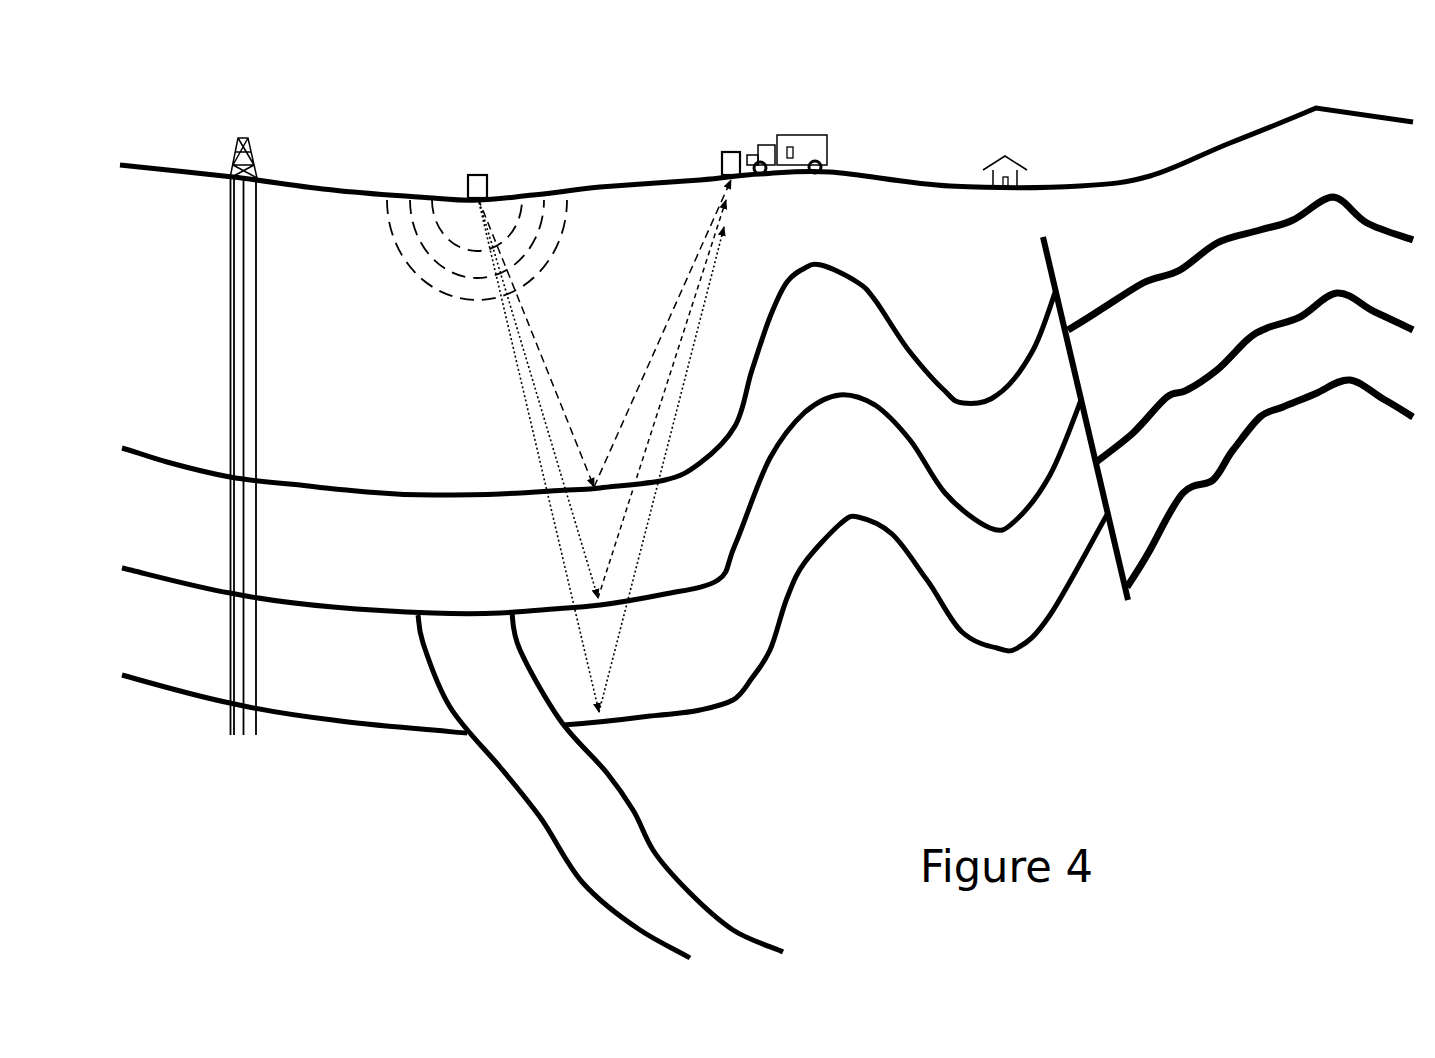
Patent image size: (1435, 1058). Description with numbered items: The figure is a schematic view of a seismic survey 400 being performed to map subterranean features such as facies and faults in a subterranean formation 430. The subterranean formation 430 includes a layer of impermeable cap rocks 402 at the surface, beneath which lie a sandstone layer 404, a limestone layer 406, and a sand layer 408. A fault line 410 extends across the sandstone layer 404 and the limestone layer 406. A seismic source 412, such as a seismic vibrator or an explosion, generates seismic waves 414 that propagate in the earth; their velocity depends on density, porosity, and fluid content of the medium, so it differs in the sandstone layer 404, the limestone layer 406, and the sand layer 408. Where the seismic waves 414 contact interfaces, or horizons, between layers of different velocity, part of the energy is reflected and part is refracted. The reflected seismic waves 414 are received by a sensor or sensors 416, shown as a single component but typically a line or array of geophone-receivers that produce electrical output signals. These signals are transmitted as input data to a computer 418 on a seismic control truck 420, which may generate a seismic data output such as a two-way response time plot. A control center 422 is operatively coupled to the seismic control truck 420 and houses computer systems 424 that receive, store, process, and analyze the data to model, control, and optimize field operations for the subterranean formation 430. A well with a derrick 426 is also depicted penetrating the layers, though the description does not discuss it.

The seismic survey 400 is at (1055, 81).
The impermeable cap rocks 402 is at (175, 337).
The sandstone layer 404 is at (357, 560).
The limestone layer 406 is at (176, 640).
The sand layer 408 is at (603, 813).
The fault line 410 is at (1053, 263).
The seismic source 412 is at (478, 175).
The seismic waves 414 is at (390, 247).
The sensor or sensors 416 is at (738, 150).
The computer 418 is at (787, 145).
The seismic control truck 420 is at (800, 135).
The control center 422 is at (1033, 170).
The computer systems 424 is at (990, 183).
The well and derrick 426 is at (243, 436).
The subterranean formation 430 is at (1275, 96).